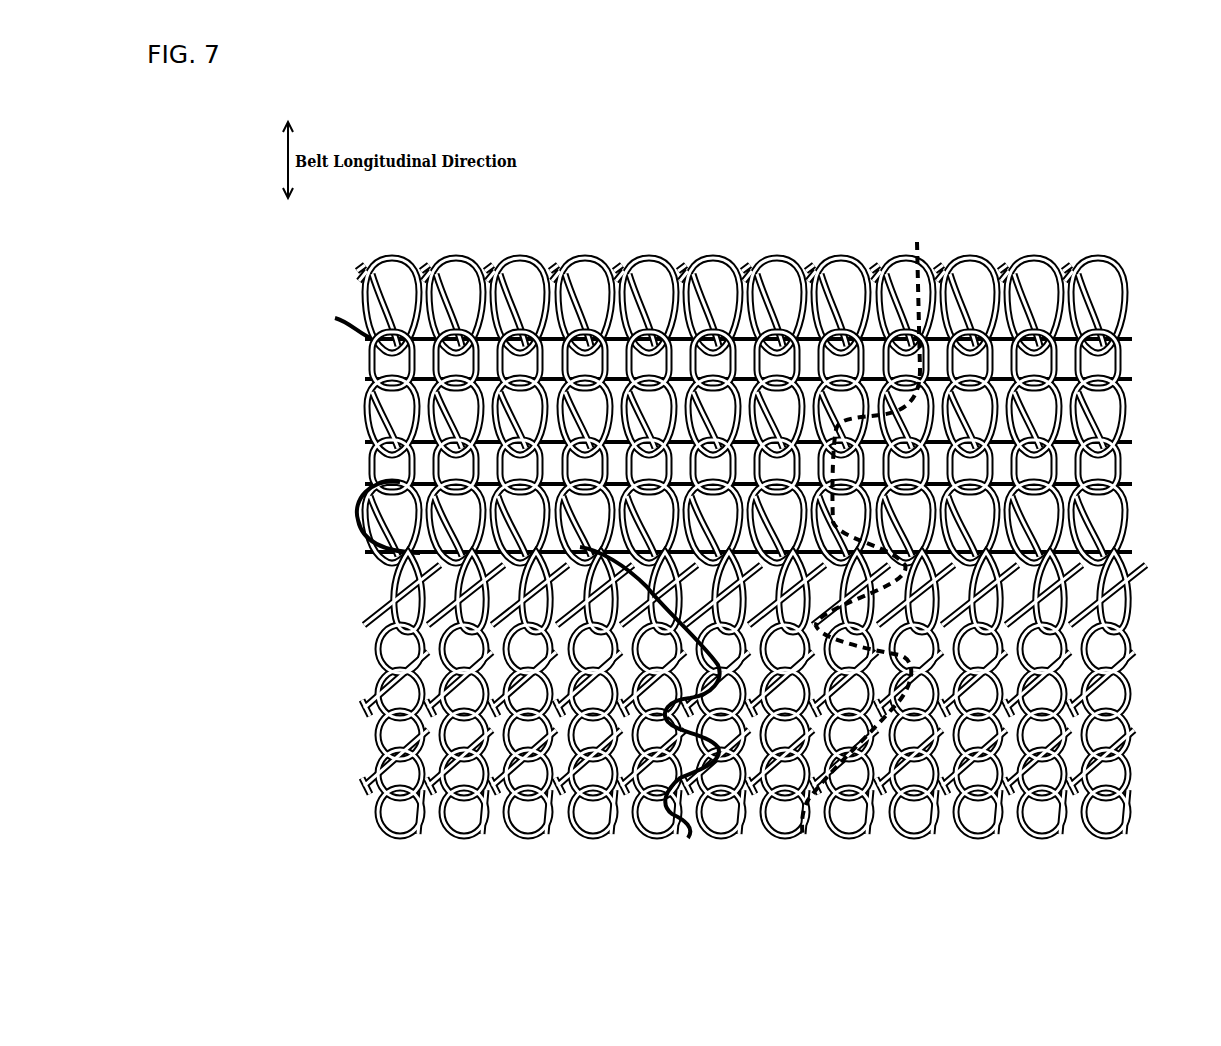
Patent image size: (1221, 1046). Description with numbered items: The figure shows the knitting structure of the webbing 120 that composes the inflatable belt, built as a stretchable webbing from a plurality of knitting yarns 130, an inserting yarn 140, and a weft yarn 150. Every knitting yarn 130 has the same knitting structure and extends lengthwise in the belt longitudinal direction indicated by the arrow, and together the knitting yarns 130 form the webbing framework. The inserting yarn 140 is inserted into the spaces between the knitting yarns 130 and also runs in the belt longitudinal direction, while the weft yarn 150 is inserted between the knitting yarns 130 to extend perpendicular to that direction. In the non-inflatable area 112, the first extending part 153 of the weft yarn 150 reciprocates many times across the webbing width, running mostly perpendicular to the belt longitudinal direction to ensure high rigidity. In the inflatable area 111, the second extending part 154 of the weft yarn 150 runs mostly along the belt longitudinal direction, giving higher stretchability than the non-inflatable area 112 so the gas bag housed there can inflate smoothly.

The inflatable area 111 is at (1148, 847).
The non-inflatable area 112 is at (1148, 252).
The webbing 120 is at (693, 232).
The knitting yarns 130 is at (583, 246).
The inserting yarn 140 is at (922, 243).
The weft yarn 150 is at (344, 344).
The first extending part 153 is at (357, 500).
The second extending part 154 is at (690, 834).